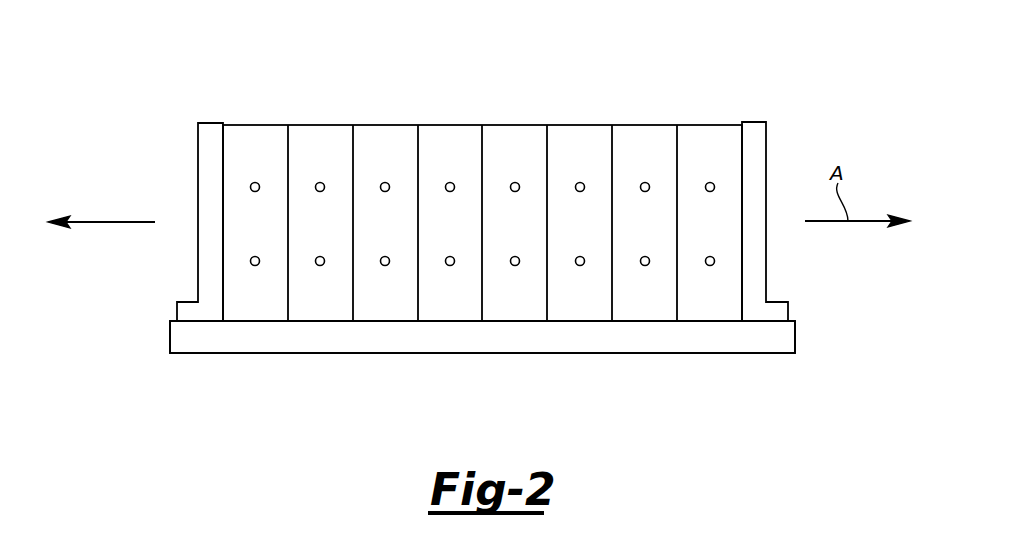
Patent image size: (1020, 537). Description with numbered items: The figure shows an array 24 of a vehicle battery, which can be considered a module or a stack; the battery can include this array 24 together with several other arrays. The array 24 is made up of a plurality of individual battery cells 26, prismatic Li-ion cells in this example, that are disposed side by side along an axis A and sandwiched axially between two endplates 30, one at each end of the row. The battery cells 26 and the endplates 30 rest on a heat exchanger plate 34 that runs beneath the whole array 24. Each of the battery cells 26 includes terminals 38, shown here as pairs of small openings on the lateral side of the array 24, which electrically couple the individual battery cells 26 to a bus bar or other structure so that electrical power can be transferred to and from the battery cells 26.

The array 24 is at (710, 80).
The battery cells 26 is at (253, 125).
The endplates 30 is at (766, 141).
The heat exchanger plate 34 is at (701, 353).
The terminals 38 is at (321, 187).